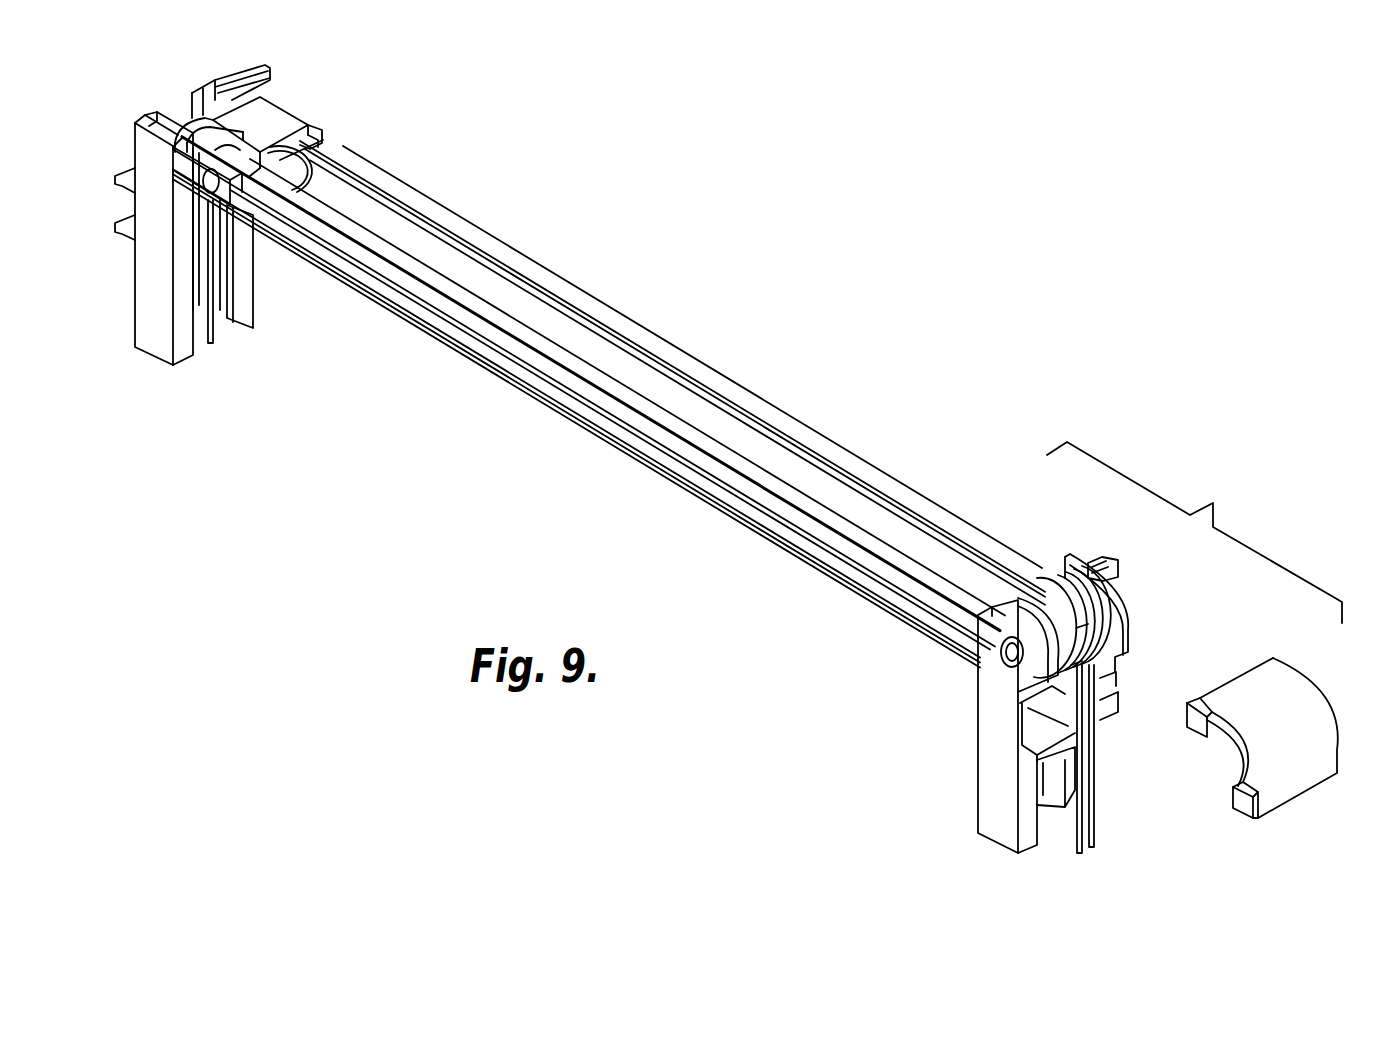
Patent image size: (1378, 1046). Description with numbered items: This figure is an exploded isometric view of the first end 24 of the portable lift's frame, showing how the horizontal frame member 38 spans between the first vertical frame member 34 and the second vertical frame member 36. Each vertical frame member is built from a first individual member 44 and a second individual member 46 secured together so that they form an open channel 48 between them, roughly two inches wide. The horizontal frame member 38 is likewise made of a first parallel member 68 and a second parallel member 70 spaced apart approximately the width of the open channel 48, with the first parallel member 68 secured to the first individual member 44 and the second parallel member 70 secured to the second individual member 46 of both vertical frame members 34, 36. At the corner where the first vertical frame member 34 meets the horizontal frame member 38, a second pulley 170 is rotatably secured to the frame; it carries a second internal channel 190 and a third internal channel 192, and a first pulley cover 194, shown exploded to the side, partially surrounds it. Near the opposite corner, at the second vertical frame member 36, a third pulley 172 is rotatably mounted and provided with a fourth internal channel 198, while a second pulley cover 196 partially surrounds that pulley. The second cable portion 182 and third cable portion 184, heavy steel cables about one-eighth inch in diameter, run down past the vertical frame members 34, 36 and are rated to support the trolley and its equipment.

The first end 24 is at (609, 402).
The first vertical frame member 34 is at (1036, 606).
The second vertical frame member 36 is at (546, 482).
The horizontal frame member 38 is at (549, 272).
The first individual member 44 is at (149, 325).
The second individual member 46 is at (245, 311).
The open channel 48 is at (610, 474).
The first parallel member 68 is at (748, 471).
The second parallel member 70 is at (782, 420).
The second pulley 170 is at (1092, 612).
The third pulley 172 is at (300, 178).
The second cable portion 182 is at (1093, 698).
The third cable portion 184 is at (212, 338).
The second internal channel 190 is at (1048, 580).
The third internal channel 192 is at (1018, 690).
The first pulley cover 194 is at (1296, 690).
The second pulley cover 196 is at (273, 117).
The fourth internal channel 198 is at (285, 160).